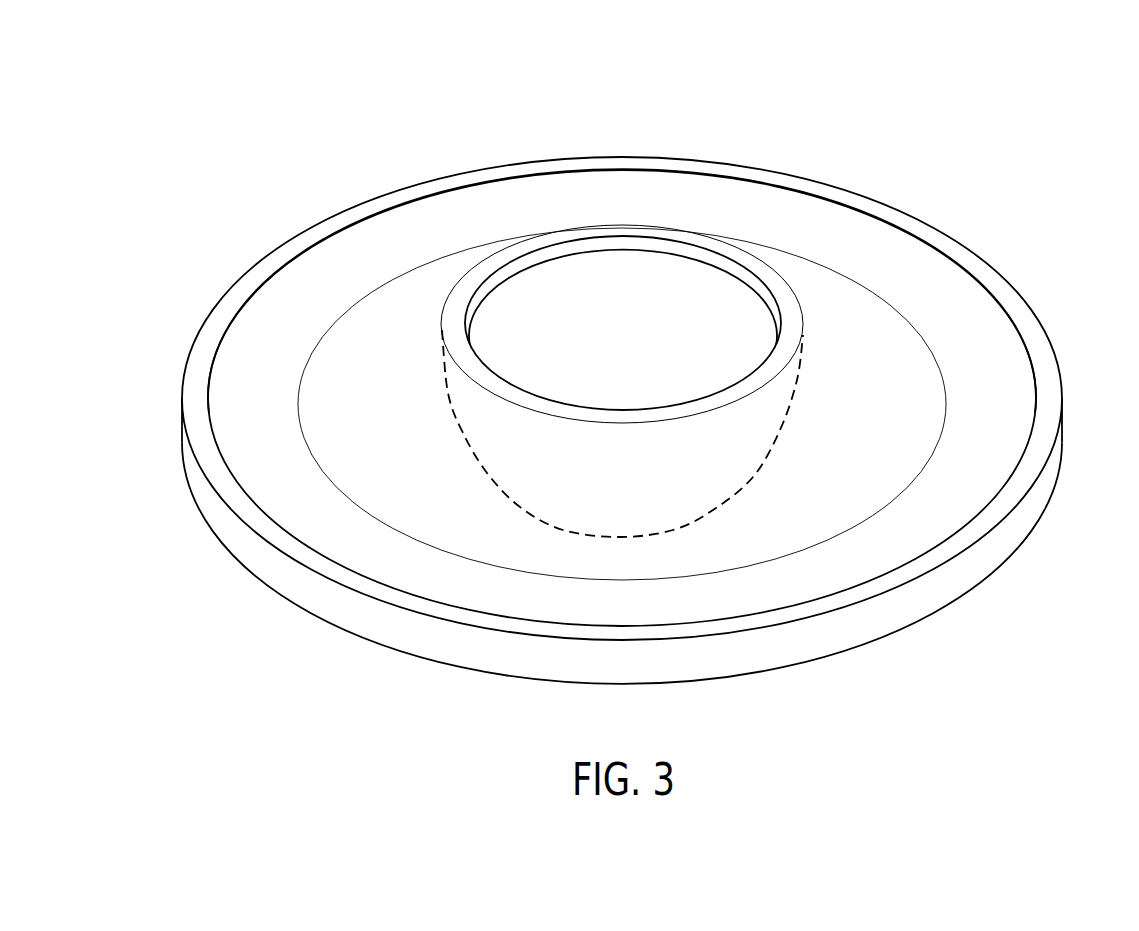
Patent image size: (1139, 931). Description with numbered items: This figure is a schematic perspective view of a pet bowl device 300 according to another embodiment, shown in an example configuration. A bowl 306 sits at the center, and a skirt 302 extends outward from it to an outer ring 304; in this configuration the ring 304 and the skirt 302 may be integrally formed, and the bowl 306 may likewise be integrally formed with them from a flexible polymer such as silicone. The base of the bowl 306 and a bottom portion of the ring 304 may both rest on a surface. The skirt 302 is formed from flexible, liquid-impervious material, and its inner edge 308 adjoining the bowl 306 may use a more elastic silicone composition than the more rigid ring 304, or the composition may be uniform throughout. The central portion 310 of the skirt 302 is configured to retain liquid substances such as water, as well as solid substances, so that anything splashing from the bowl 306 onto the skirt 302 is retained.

The pet bowl device 300 is at (652, 360).
The skirt 302 is at (932, 345).
The ring 304 is at (947, 614).
The bowl 306 is at (672, 320).
The inner edge 308 is at (770, 282).
The central portion 310 is at (418, 393).